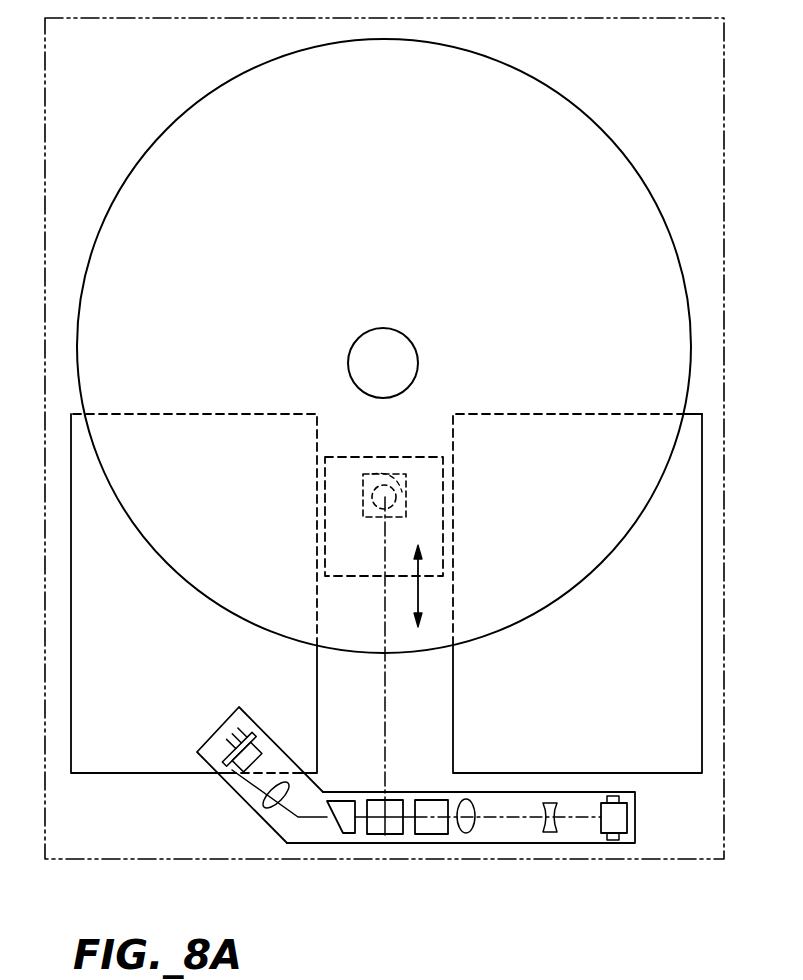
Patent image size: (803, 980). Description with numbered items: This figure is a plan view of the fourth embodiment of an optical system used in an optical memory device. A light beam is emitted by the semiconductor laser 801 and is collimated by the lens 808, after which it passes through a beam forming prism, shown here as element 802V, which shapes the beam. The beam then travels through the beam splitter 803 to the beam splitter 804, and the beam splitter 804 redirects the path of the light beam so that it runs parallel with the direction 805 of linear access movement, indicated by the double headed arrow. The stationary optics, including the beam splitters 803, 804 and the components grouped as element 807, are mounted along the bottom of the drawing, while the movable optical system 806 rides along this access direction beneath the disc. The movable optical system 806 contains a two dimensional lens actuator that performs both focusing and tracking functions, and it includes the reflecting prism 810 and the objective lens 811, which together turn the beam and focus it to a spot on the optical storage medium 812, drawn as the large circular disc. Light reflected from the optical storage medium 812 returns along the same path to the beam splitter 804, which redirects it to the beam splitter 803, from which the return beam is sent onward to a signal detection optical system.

The optical storage medium 812 is at (575, 100).
The reflecting prism 810 is at (368, 455).
The movable optical system 806 is at (405, 455).
The objective lens 811 is at (407, 500).
The direction of linear access movement 805 is at (420, 603).
The semiconductor laser 801 is at (229, 768).
The lens 808 is at (266, 805).
The beam shaping prism 802V is at (343, 828).
The beam splitter 803 is at (385, 835).
The beam splitter 804 is at (431, 817).
The detector optics bench 807 is at (560, 843).